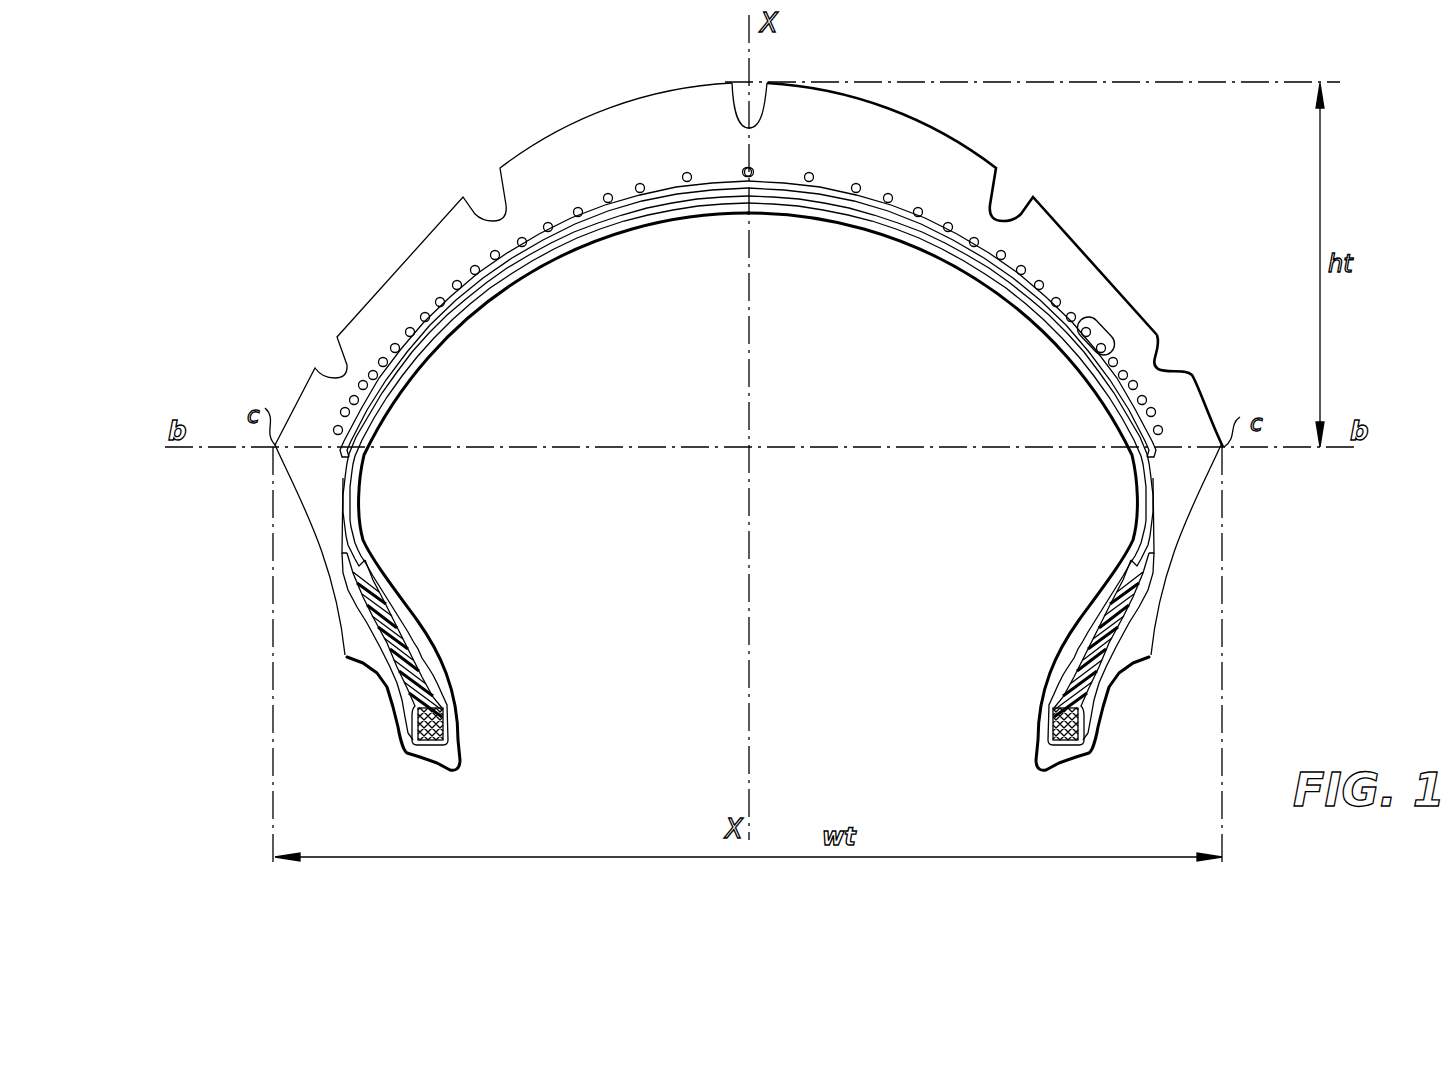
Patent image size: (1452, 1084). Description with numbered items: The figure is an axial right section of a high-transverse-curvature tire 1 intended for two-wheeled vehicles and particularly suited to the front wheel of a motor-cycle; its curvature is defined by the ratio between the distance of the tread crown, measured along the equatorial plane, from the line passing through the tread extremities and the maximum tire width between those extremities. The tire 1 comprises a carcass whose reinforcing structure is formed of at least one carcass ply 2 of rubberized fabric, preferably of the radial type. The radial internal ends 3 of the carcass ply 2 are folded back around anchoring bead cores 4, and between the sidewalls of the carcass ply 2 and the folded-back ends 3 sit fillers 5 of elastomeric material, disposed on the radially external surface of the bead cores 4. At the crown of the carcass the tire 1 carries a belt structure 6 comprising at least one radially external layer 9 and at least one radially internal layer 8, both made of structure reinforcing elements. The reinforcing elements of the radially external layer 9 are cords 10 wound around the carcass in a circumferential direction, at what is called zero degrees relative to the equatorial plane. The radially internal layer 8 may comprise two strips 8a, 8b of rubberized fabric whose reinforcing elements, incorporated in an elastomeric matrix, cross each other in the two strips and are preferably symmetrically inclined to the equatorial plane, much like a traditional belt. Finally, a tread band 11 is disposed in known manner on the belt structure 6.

The tire 1 is at (942, 100).
The carcass ply 2 is at (343, 478).
The radial internal ends 3 is at (357, 620).
The bead cores 4 is at (442, 722).
The fillers 5 is at (400, 648).
The belt structure 6 is at (1180, 437).
The radially internal layer 8 is at (748, 373).
The first strip 8a is at (603, 220).
The second strip 8b is at (688, 193).
The radially external layer 9 is at (1117, 343).
The cords 10 is at (1040, 283).
The tread band 11 is at (826, 118).